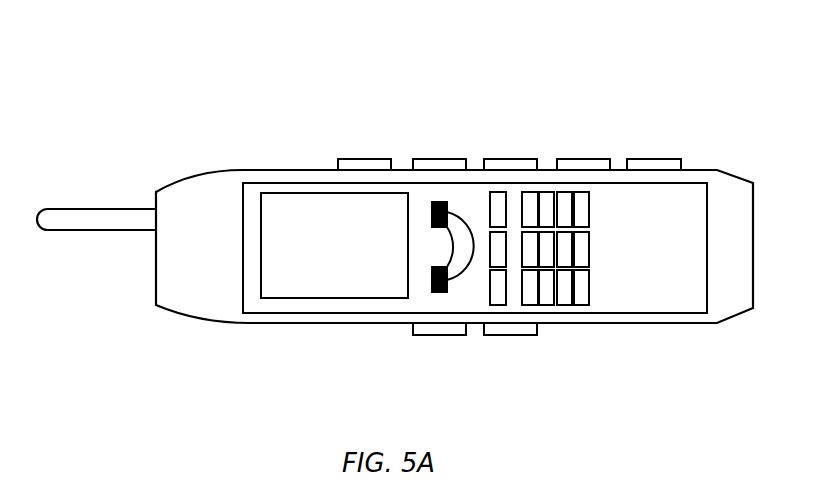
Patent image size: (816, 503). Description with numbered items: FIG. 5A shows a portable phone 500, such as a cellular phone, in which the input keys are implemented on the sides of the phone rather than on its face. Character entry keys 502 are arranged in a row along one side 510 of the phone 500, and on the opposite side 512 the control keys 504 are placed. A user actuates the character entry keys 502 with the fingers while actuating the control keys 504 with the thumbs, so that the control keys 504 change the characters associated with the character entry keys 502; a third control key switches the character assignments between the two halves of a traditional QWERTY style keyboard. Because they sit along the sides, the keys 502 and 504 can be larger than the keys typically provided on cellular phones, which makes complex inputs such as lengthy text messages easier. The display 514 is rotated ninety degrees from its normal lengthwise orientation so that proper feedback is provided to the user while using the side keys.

The phone 500 is at (303, 142).
The side of phone 510 is at (323, 170).
The character entry keys 502 is at (508, 143).
The control keys 504 is at (452, 343).
The opposite side of phone 512 is at (316, 323).
The display 514 is at (308, 277).